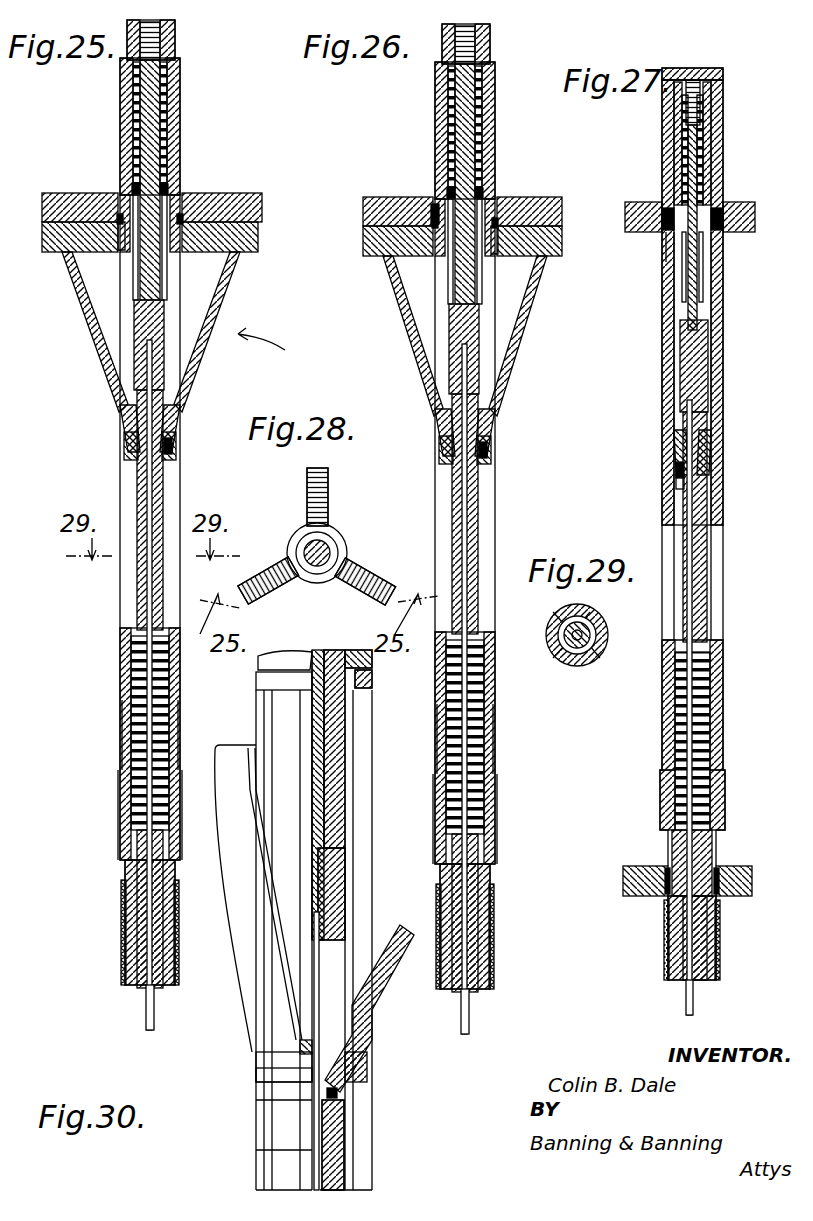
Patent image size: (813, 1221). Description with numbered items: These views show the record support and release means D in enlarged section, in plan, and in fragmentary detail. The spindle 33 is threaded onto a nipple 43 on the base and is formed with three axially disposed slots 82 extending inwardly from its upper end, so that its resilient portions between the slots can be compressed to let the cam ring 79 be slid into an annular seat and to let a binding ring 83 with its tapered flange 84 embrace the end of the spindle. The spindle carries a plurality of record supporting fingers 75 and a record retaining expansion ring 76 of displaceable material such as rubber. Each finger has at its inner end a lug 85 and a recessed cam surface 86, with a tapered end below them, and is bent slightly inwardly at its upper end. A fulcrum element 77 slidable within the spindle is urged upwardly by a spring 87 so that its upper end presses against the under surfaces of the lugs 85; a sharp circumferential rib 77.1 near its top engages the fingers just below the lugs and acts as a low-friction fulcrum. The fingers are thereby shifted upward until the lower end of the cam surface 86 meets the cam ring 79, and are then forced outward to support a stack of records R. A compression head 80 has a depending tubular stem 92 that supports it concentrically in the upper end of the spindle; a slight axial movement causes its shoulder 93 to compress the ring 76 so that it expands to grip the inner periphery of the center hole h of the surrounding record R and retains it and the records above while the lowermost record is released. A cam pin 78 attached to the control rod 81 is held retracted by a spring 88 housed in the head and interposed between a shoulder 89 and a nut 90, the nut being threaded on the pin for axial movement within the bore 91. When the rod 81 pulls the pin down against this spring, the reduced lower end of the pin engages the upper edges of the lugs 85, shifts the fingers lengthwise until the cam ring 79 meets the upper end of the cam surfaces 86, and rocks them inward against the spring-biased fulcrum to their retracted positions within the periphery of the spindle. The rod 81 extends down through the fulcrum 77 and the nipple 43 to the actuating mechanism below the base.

In FIG. 25, the nut 90 is at (175, 46).
In FIG. 26, the nut 90 is at (486, 44).
In FIG. 27, the nut 90 is at (708, 80).
In FIG. 28, the nut 90 is at (332, 556).
In FIG. 25, the compression head 80 is at (180, 92).
In FIG. 26, the compression head 80 is at (444, 130).
In FIG. 27, the compression head 80 is at (722, 134).
In FIG. 28, the compression head 80 is at (330, 536).
In FIG. 25, the bore 91 is at (128, 102).
In FIG. 26, the bore 91 is at (491, 127).
In FIG. 25, the spring 88 is at (160, 146).
In FIG. 26, the spring 88 is at (490, 184).
In FIG. 27, the spring 88 is at (716, 158).
In FIG. 25, the shoulder 89 is at (170, 190).
In FIG. 26, the shoulder 89 is at (438, 173).
In FIG. 25, the expansion ring 76 is at (182, 212).
In FIG. 26, the expansion ring 76 is at (465, 227).
In FIG. 27, the expansion ring 76 is at (664, 230).
In FIG. 30, the expansion ring 76 is at (372, 668).
In FIG. 25, the binding ring 83 is at (120, 222).
In FIG. 26, the binding ring 83 is at (531, 215).
In FIG. 25, the center hole h is at (120, 216).
In FIG. 26, the center hole h is at (482, 190).
In FIG. 27, the center hole h is at (722, 870).
In FIG. 25, the record R is at (260, 236).
In FIG. 26, the record R is at (439, 226).
In FIG. 27, the record R is at (752, 216).
In FIG. 25, the tapered flange 84 is at (248, 250).
In FIG. 26, the tapered flange 84 is at (543, 241).
In FIG. 30, the tapered flange 84 is at (372, 690).
In FIG. 26, the shoulder 93 is at (399, 200).
In FIG. 27, the shoulder 93 is at (728, 208).
In FIG. 25, the tubular stem 92 is at (164, 290).
In FIG. 26, the tubular stem 92 is at (486, 251).
In FIG. 27, the tubular stem 92 is at (710, 266).
In FIG. 30, the tubular stem 92 is at (336, 746).
In FIG. 25, the slots 82 is at (120, 612).
In FIG. 26, the slots 82 is at (447, 444).
In FIG. 27, the slots 82 is at (670, 262).
In FIG. 29, the slots 82 is at (592, 608).
In FIG. 30, the slots 82 is at (356, 790).
In FIG. 25, the cam pin 78 is at (134, 322).
In FIG. 26, the cam pin 78 is at (509, 349).
In FIG. 27, the cam pin 78 is at (692, 346).
In FIG. 30, the cam pin 78 is at (330, 880).
In FIG. 25, the record supporting fingers 75 is at (210, 326).
In FIG. 26, the record supporting fingers 75 is at (450, 336).
In FIG. 27, the record supporting fingers 75 is at (722, 300).
In FIG. 28, the record supporting fingers 75 is at (330, 486).
In FIG. 30, the record supporting fingers 75 is at (244, 935).
In FIG. 25, the record support and release means D is at (268, 345).
In FIG. 25, the cam surface 86 is at (122, 424).
In FIG. 26, the cam surface 86 is at (509, 426).
In FIG. 27, the cam surface 86 is at (674, 446).
In FIG. 25, the lug 85 is at (176, 422).
In FIG. 26, the lug 85 is at (414, 426).
In FIG. 27, the lug 85 is at (704, 456).
In FIG. 30, the lug 85 is at (312, 1052).
In FIG. 25, the cam ring 79 is at (122, 436).
In FIG. 26, the cam ring 79 is at (491, 441).
In FIG. 27, the cam ring 79 is at (714, 436).
In FIG. 30, the cam ring 79 is at (262, 1092).
In FIG. 25, the rib 77.1 is at (170, 446).
In FIG. 26, the rib 77.1 is at (521, 454).
In FIG. 27, the rib 77.1 is at (676, 470).
In FIG. 30, the rib 77.1 is at (340, 1100).
In FIG. 25, the fulcrum element 77 is at (136, 590).
In FIG. 26, the fulcrum element 77 is at (503, 693).
In FIG. 27, the fulcrum element 77 is at (692, 576).
In FIG. 29, the fulcrum element 77 is at (587, 660).
In FIG. 30, the fulcrum element 77 is at (346, 1170).
In FIG. 25, the spindle 33 is at (120, 668).
In FIG. 26, the spindle 33 is at (488, 748).
In FIG. 27, the spindle 33 is at (724, 742).
In FIG. 29, the spindle 33 is at (596, 634).
In FIG. 25, the spring 87 is at (130, 708).
In FIG. 26, the spring 87 is at (495, 737).
In FIG. 27, the spring 87 is at (722, 692).
In FIG. 25, the nipple 43 is at (124, 916).
In FIG. 26, the nipple 43 is at (483, 926).
In FIG. 27, the nipple 43 is at (706, 944).
In FIG. 25, the control rod 81 is at (154, 1005).
In FIG. 26, the control rod 81 is at (495, 689).
In FIG. 27, the control rod 81 is at (694, 1002).
In FIG. 29, the control rod 81 is at (566, 632).
In FIG. 30, the control rod 81 is at (320, 926).